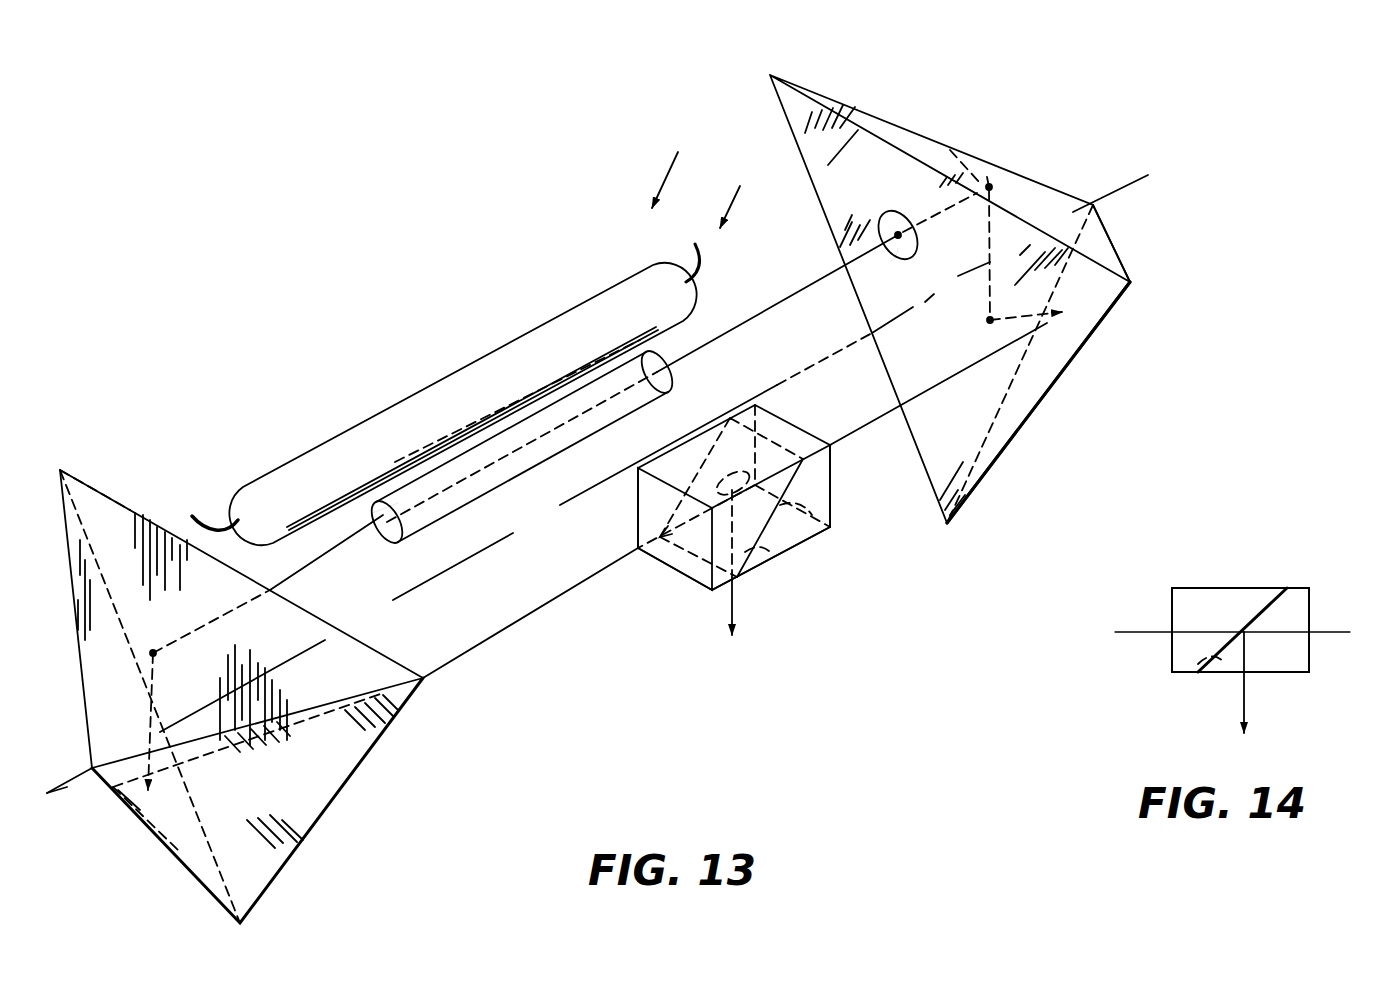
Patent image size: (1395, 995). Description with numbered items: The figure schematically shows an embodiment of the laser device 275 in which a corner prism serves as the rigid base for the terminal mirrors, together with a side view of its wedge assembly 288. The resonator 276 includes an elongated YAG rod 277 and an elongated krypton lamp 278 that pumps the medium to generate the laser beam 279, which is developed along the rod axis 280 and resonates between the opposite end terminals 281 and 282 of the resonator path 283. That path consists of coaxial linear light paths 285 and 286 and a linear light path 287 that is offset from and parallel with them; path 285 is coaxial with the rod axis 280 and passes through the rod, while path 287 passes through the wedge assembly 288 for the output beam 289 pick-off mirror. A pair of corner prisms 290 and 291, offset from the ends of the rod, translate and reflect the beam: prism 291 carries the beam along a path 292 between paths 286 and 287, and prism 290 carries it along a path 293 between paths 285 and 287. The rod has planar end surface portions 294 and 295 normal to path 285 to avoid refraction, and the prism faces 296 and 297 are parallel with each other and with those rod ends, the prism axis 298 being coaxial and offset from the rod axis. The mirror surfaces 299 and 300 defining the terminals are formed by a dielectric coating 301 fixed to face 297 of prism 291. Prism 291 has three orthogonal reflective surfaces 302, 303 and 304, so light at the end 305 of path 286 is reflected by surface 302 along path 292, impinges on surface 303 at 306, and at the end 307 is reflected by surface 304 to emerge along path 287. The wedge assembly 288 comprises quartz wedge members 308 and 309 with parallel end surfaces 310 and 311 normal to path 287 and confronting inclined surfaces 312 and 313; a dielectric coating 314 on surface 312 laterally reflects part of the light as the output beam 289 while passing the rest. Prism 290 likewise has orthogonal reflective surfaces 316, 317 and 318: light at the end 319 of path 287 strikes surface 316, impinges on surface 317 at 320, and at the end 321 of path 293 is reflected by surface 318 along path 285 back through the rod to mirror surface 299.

In FIG. 13, the laser device 275 is at (676, 167).
In FIG. 13, the resonator 276 is at (741, 191).
In FIG. 13, the YAG rod 277 is at (548, 460).
In FIG. 13, the krypton lamp 278 is at (505, 338).
In FIG. 13, the laser beam 279 is at (320, 562).
In FIG. 13, the rod axis 280 is at (514, 480).
In FIG. 13, the end terminal 281 is at (900, 252).
In FIG. 13, the end terminal 282 is at (928, 208).
In FIG. 13, the resonator path 283 is at (440, 660).
In FIG. 13, the linear light path 285 is at (797, 292).
In FIG. 13, the linear light path 286 is at (958, 162).
In FIG. 13, the linear light path 287 is at (572, 590).
In FIG. 14, the linear light path 287 is at (1162, 636).
In FIG. 13, the wedge assembly 288 is at (734, 511).
In FIG. 14, the wedge assembly 288 is at (1188, 578).
In FIG. 13, the output beam 289 is at (736, 606).
In FIG. 14, the output beam 289 is at (1252, 710).
In FIG. 13, the corner prism 290 is at (100, 487).
In FIG. 13, the corner prism 291 is at (820, 96).
In FIG. 13, the path 292 is at (951, 306).
In FIG. 13, the path 293 is at (215, 773).
In FIG. 13, the end surface portion 294 is at (388, 543).
In FIG. 13, the end surface portion 295 is at (673, 371).
In FIG. 13, the prism facial surface portion 296 is at (132, 508).
In FIG. 13, the prism facial surface portion 297 is at (1058, 383).
In FIG. 13, the prism axis 298 is at (482, 550).
In FIG. 13, the reflective mirror surface 299 is at (876, 222).
In FIG. 13, the reflective mirror surface 300 is at (920, 238).
In FIG. 13, the dielectric coating 301 is at (950, 273).
In FIG. 13, the light reflective surface 302 is at (1058, 206).
In FIG. 13, the light reflective surface 303 is at (975, 388).
In FIG. 13, the light reflective surface 304 is at (1090, 342).
In FIG. 13, the end of path 286 305 is at (1008, 170).
In FIG. 13, the impingement point 306 is at (996, 314).
In FIG. 13, the end of path 292 307 is at (1065, 313).
In FIG. 13, the wedge member 308 is at (634, 505).
In FIG. 14, the wedge member 308 is at (1240, 583).
In FIG. 13, the wedge member 309 is at (832, 500).
In FIG. 14, the wedge member 309 is at (1296, 676).
In FIG. 13, the end surface portion 310 is at (696, 570).
In FIG. 14, the end surface portion 310 is at (1172, 612).
In FIG. 13, the end surface portion 311 is at (832, 470).
In FIG. 14, the end surface portion 311 is at (1318, 612).
In FIG. 13, the inclined surface 312 is at (812, 526).
In FIG. 14, the inclined surface 312 is at (1218, 672).
In FIG. 13, the inclined surface 313 is at (762, 556).
In FIG. 14, the inclined surface 313 is at (1192, 658).
In FIG. 13, the dielectric coating 314 is at (731, 497).
In FIG. 14, the dielectric coating 314 is at (1262, 625).
In FIG. 13, the light reflective planar surface portion 316 is at (343, 800).
In FIG. 13, the light reflective planar surface portion 317 is at (176, 844).
In FIG. 13, the light reflective planar surface portion 318 is at (100, 670).
In FIG. 13, the end of path 287 319 is at (292, 742).
In FIG. 13, the impingement point 320 is at (120, 782).
In FIG. 13, the end of path 293 321 is at (158, 657).